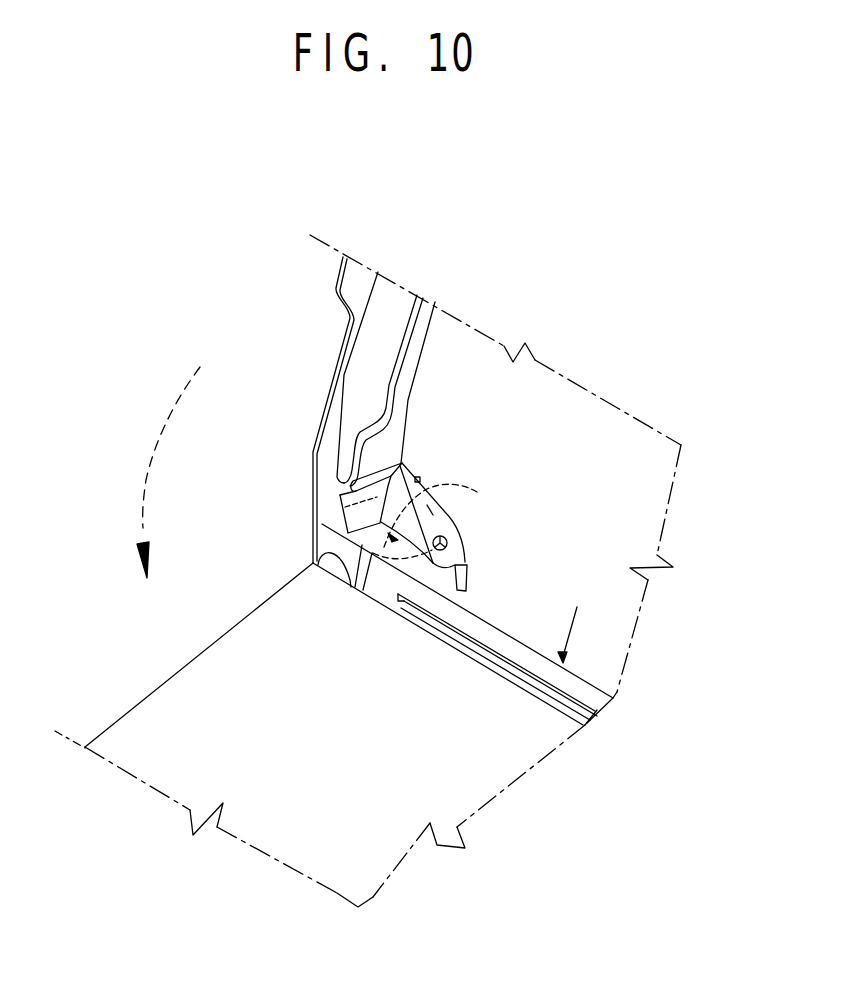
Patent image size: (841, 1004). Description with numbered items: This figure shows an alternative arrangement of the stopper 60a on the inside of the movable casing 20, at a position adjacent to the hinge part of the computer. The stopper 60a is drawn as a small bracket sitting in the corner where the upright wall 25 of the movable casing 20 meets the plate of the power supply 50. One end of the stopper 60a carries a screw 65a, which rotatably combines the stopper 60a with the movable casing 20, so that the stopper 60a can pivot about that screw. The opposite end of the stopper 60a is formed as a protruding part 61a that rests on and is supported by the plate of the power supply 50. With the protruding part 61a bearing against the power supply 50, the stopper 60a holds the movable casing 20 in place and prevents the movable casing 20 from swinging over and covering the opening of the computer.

The movable casing 20 is at (615, 617).
The side panel 25 is at (322, 459).
The power supply 50 is at (147, 722).
The stopper 60a is at (231, 473).
The protruding part 61a is at (340, 496).
The screw 65a is at (322, 525).